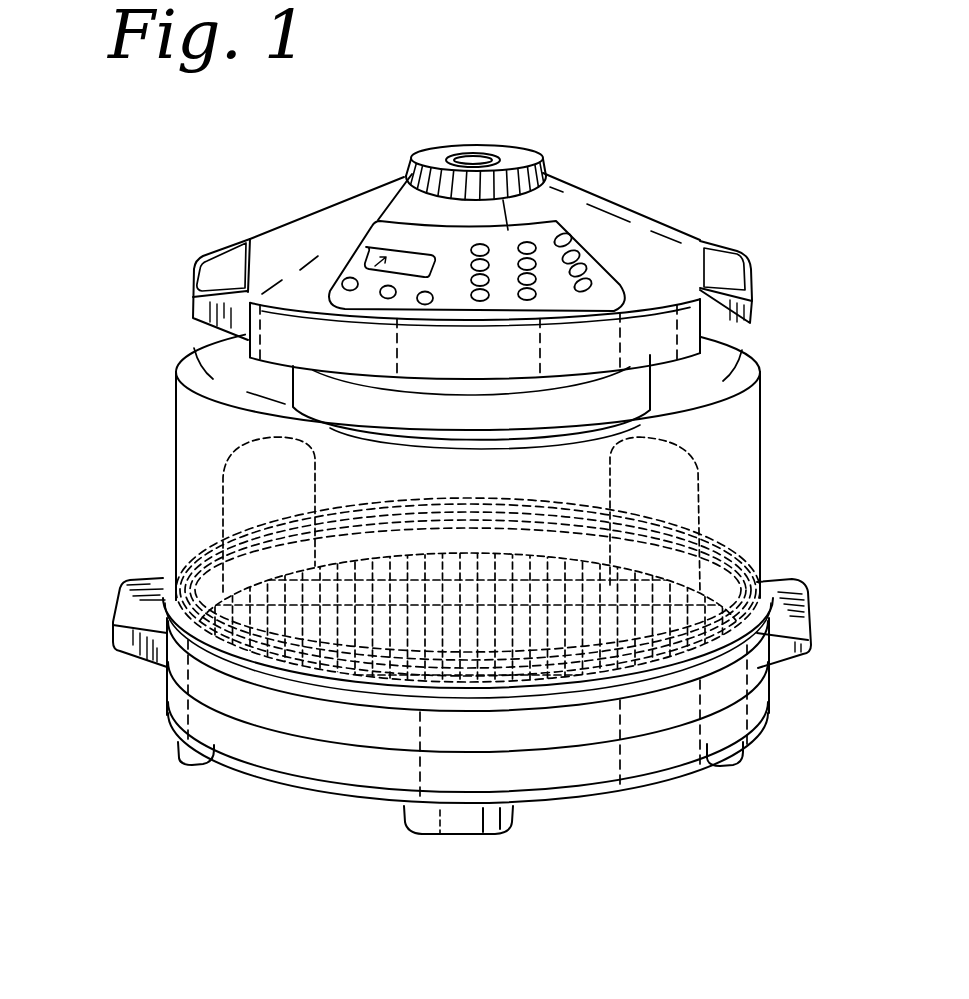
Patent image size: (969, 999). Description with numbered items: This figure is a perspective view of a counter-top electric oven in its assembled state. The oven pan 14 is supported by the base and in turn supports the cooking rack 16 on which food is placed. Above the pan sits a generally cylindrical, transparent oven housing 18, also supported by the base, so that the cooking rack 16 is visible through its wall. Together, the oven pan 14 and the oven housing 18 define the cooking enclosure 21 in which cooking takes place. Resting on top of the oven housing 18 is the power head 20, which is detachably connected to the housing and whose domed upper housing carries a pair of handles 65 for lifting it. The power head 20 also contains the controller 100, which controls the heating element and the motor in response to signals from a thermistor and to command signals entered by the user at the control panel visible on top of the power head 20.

The oven pan 14 is at (198, 600).
The cooking rack 16 is at (700, 513).
The transparent oven housing 18 is at (762, 411).
The power head 20 is at (597, 195).
The cooking enclosure 21 is at (168, 444).
The handles 65 is at (226, 257).
The controller 100 is at (342, 254).